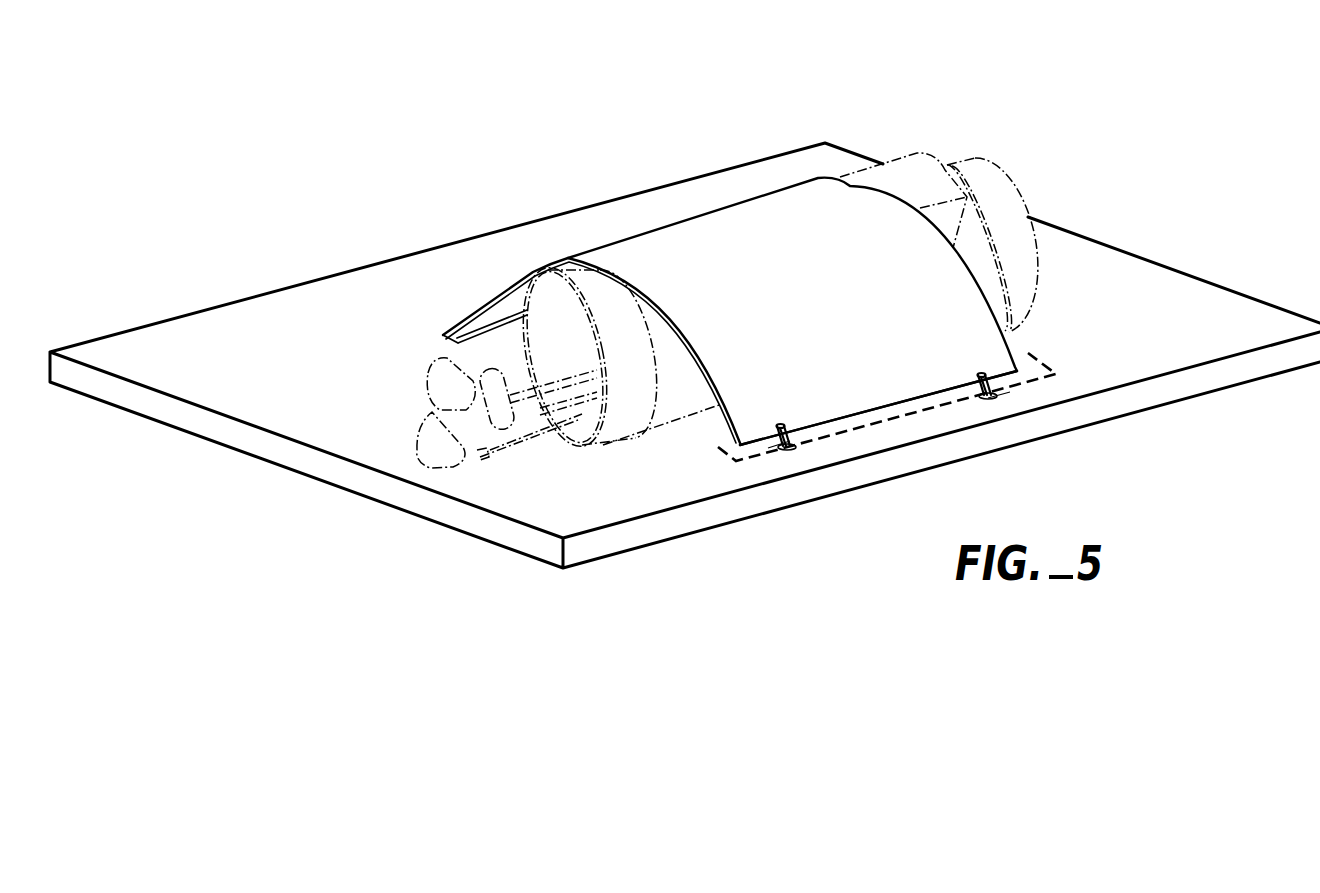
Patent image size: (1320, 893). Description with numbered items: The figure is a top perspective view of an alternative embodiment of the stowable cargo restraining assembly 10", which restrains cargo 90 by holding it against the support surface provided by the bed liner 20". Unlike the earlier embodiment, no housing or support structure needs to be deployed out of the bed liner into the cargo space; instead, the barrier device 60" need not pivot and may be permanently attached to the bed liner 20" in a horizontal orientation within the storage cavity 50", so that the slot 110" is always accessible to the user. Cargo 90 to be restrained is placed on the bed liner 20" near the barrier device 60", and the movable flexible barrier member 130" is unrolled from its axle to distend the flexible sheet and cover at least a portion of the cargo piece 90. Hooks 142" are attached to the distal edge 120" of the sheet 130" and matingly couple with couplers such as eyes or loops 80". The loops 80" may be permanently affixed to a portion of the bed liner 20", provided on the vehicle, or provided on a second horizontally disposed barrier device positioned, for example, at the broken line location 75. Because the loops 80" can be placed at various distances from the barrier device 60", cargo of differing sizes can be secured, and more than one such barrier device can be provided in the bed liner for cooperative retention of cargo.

The stowable cargo restraining assembly 10 is at (1212, 88).
The bed liner 20 is at (1218, 303).
The storage cavity 50 is at (458, 341).
The barrier device 60 is at (687, 342).
The broken line location 75 is at (960, 400).
The loops 80 is at (793, 435).
The cargo 90 is at (995, 158).
The slot 110 is at (443, 333).
The distal edge 120 is at (880, 402).
The barrier member 130 is at (845, 298).
The hooks 142 is at (768, 445).